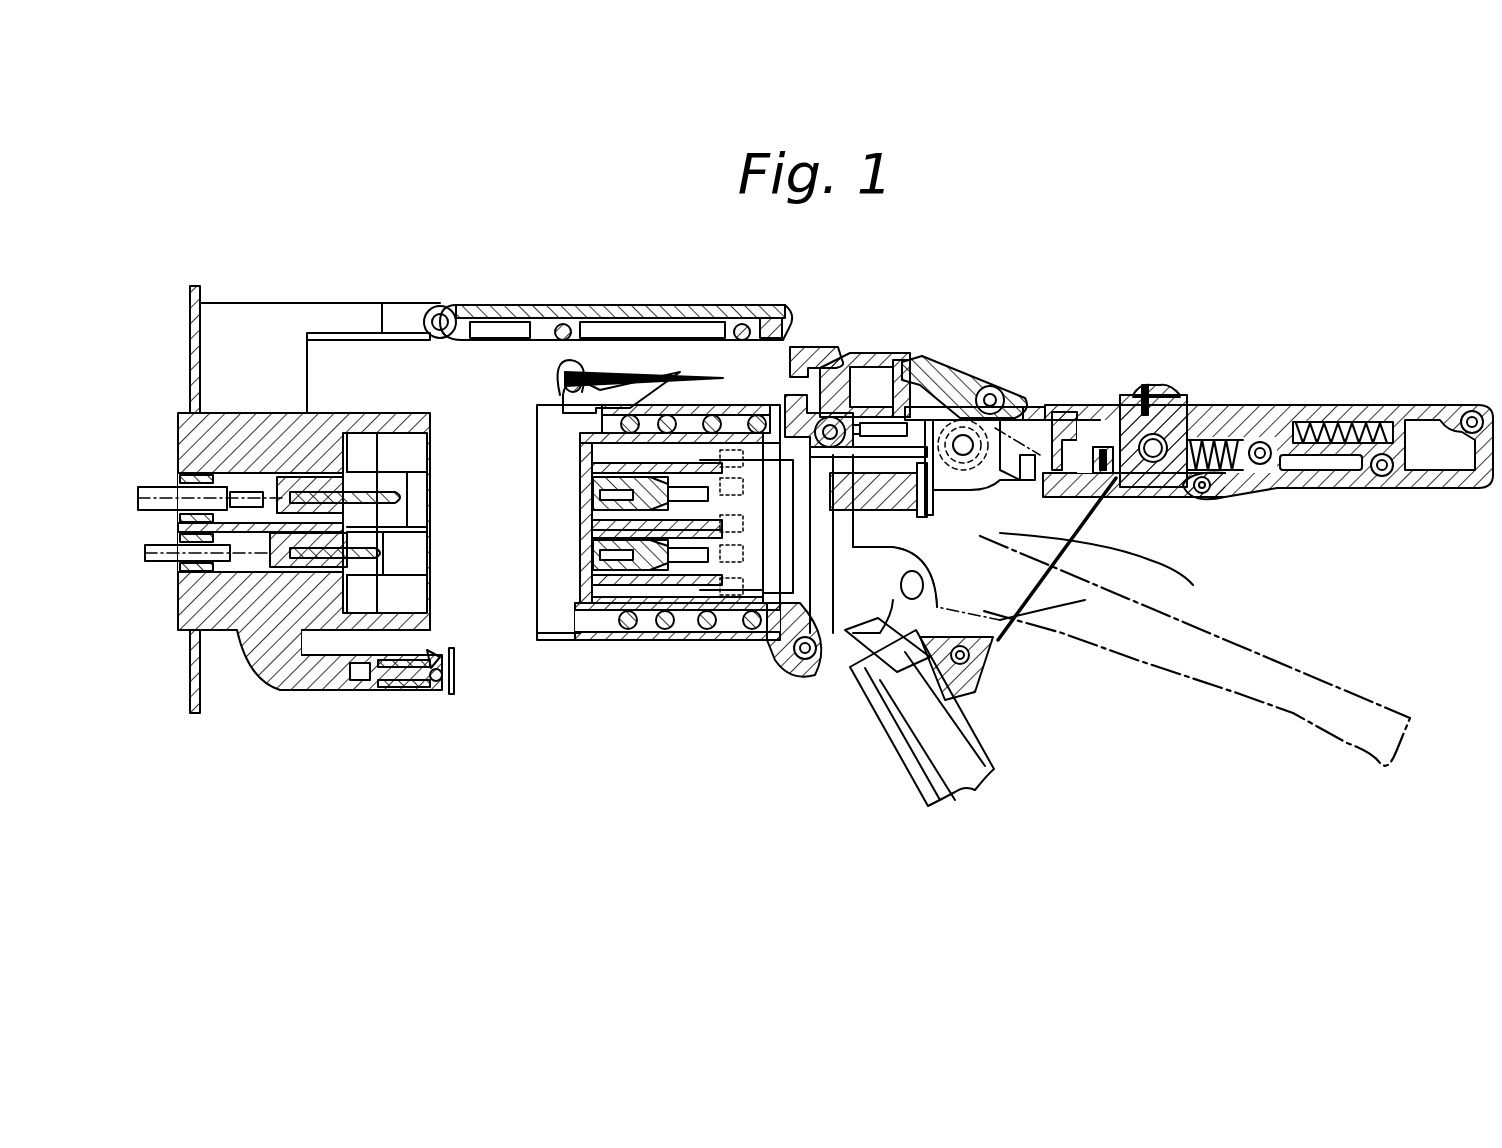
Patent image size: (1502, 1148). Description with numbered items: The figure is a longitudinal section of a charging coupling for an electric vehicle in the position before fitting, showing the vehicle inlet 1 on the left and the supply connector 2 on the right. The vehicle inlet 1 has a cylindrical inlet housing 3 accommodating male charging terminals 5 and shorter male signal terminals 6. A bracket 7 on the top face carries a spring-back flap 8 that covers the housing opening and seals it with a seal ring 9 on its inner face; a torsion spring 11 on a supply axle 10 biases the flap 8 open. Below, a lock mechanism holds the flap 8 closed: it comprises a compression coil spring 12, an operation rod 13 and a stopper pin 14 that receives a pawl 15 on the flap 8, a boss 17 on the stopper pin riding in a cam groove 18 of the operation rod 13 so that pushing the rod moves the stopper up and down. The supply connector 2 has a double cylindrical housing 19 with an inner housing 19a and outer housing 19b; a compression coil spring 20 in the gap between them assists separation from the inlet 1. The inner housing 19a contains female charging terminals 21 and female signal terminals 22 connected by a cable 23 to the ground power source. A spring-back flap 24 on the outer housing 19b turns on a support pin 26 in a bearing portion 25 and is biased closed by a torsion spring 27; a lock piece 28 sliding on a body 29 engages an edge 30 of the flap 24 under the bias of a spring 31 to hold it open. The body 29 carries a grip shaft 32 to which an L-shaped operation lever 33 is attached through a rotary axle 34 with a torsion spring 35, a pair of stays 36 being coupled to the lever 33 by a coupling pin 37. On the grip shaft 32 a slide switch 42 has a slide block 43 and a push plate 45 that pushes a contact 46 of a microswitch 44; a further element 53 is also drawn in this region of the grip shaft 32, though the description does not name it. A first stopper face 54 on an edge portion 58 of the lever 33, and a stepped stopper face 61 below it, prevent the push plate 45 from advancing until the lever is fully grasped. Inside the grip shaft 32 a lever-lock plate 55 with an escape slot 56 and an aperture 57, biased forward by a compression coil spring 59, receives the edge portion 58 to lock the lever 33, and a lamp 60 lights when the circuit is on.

The vehicle inlet 1 is at (265, 688).
The supply connector 2 is at (690, 665).
The inlet housing 3 is at (213, 415).
The male charging terminals 5 is at (400, 490).
The male signal terminals 6 is at (383, 570).
The bracket 7 is at (267, 317).
The spring-back flap 8 is at (712, 318).
The seal ring 9 is at (556, 323).
The supply axle 10 is at (437, 306).
The torsion spring 11 is at (383, 326).
The compression coil spring 12 is at (380, 693).
The operation rod 13 is at (455, 675).
The stopper pin 14 is at (443, 648).
The pawl 15 is at (786, 325).
The boss 17 is at (420, 692).
The cam groove 18 is at (438, 692).
The double cylindrical housing 19 is at (548, 462).
The inner housing 19a is at (600, 612).
The outer housing 19b is at (653, 640).
The compression coil spring 20 is at (722, 640).
The female charging terminals 21 is at (593, 497).
The female signal terminals 22 is at (593, 556).
The cable 23 is at (918, 800).
The spring-back flap 24 is at (792, 350).
The bearing portion 25 is at (560, 408).
The support pin 26 is at (558, 378).
The torsion spring 27 is at (657, 372).
The lock piece 28 is at (905, 362).
The body 29 is at (992, 386).
The edge 30 is at (830, 366).
The spring 31 is at (895, 368).
The grip shaft 32 is at (1352, 480).
The operation lever 33 is at (1292, 712).
The rotary axle 34 is at (1037, 407).
The torsion spring 35 is at (970, 388).
The stays 36 is at (905, 540).
The coupling pin 37 is at (1000, 640).
The slide switch 42 is at (1146, 395).
The slide block 43 is at (1207, 497).
The microswitch 44 is at (812, 660).
The push plate 45 is at (1097, 498).
The contact 46 is at (985, 548).
The spring 53 is at (1213, 438).
The first stopper face 54 is at (1116, 573).
The lever-lock plate 55 is at (1258, 440).
The escape slot 56 is at (1133, 397).
The aperture 57 is at (1063, 417).
The edge portion 58 is at (1025, 458).
The compression coil spring 59 is at (1357, 405).
The lamp 60 is at (953, 387).
The stepped stopper face 61 is at (1090, 612).